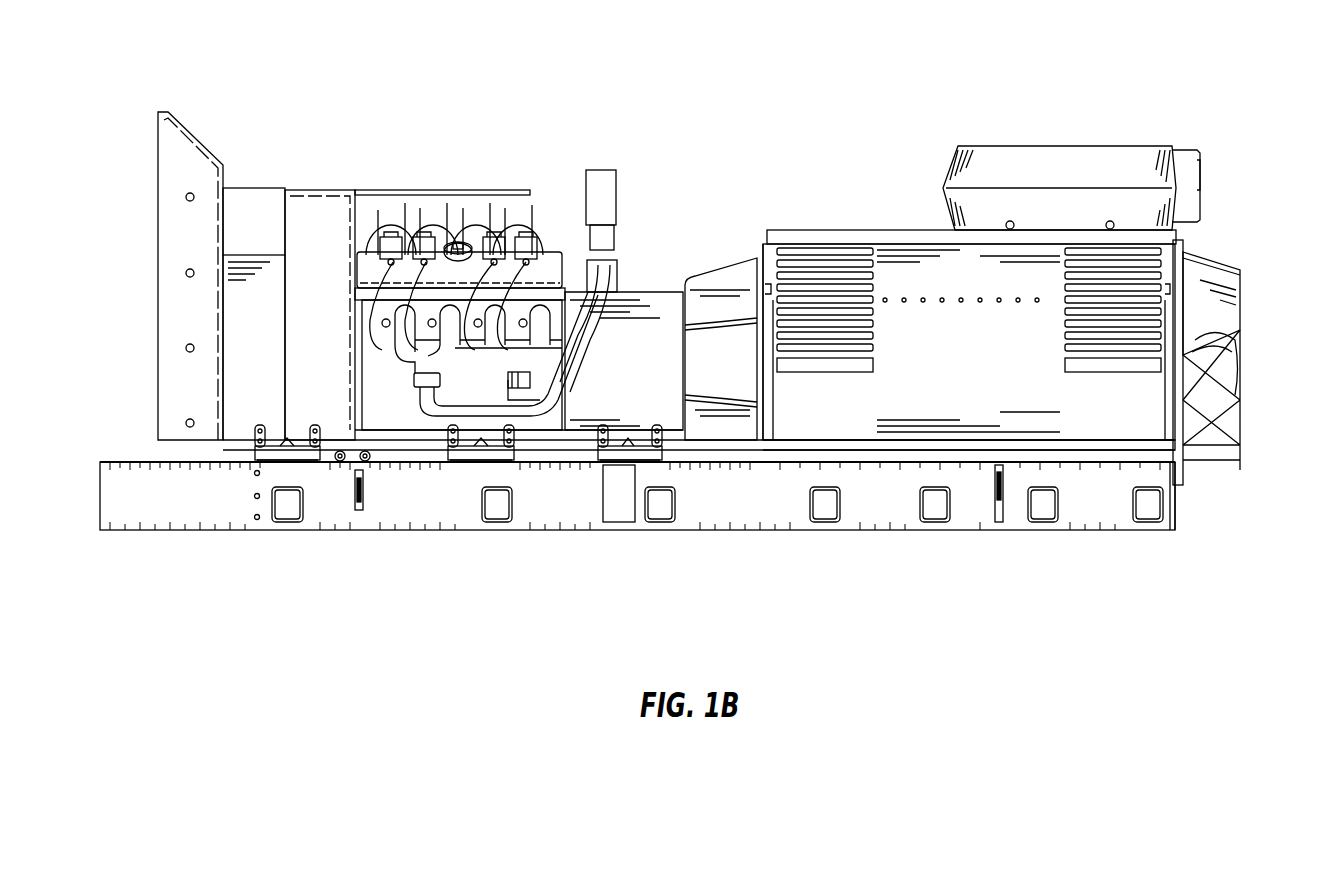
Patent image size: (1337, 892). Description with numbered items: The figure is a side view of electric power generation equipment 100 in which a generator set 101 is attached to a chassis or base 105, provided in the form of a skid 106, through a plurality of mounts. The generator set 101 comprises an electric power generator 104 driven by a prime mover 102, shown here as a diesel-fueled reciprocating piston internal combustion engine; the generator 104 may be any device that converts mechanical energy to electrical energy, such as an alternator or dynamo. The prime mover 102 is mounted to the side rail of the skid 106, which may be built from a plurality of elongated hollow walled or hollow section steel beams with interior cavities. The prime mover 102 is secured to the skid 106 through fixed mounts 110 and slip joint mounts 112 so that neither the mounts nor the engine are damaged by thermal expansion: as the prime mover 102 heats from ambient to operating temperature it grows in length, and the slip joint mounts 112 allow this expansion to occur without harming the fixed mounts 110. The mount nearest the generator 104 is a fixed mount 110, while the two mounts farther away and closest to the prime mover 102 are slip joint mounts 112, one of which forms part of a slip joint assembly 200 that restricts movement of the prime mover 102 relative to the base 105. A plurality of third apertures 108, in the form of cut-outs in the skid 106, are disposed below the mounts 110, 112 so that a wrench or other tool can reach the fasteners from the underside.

The electric power generation equipment 100 is at (1222, 85).
The generator set 101 is at (140, 219).
The prime mover 102 is at (540, 160).
The electric power generator 104 is at (806, 192).
The base 105 is at (970, 530).
The skid 106 is at (1175, 508).
The third apertures 108 is at (288, 515).
The fixed mounts 110 is at (640, 462).
The slip joint mounts 112 is at (300, 455).
The slip joint assembly 200 is at (240, 446).